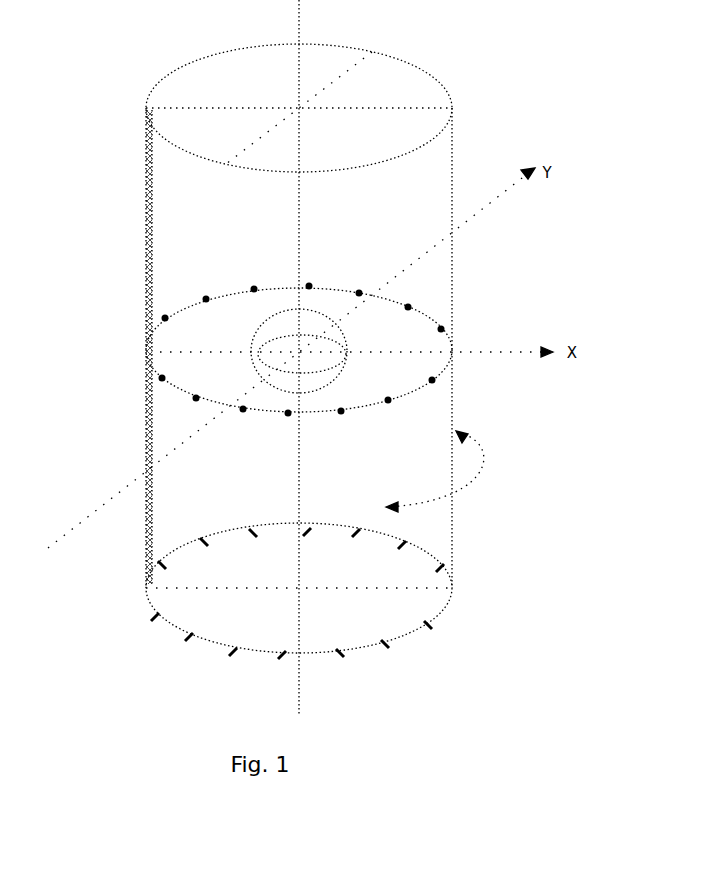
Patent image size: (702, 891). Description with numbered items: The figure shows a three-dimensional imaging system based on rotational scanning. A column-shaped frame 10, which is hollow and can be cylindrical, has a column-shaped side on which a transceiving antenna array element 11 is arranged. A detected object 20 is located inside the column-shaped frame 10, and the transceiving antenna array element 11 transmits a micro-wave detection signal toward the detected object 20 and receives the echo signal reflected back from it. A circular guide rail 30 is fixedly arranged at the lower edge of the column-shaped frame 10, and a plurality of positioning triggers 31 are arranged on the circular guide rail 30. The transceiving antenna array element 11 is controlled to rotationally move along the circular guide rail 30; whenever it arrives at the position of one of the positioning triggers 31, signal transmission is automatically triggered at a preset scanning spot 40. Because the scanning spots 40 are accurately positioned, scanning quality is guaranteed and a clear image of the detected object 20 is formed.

The column-shaped frame 10 is at (472, 305).
The transceiving antenna array element 11 is at (142, 245).
The detected object 20 is at (316, 311).
The circular guide rail 30 is at (443, 613).
The positioning trigger 31 is at (342, 654).
The scanning spot 40 is at (390, 400).